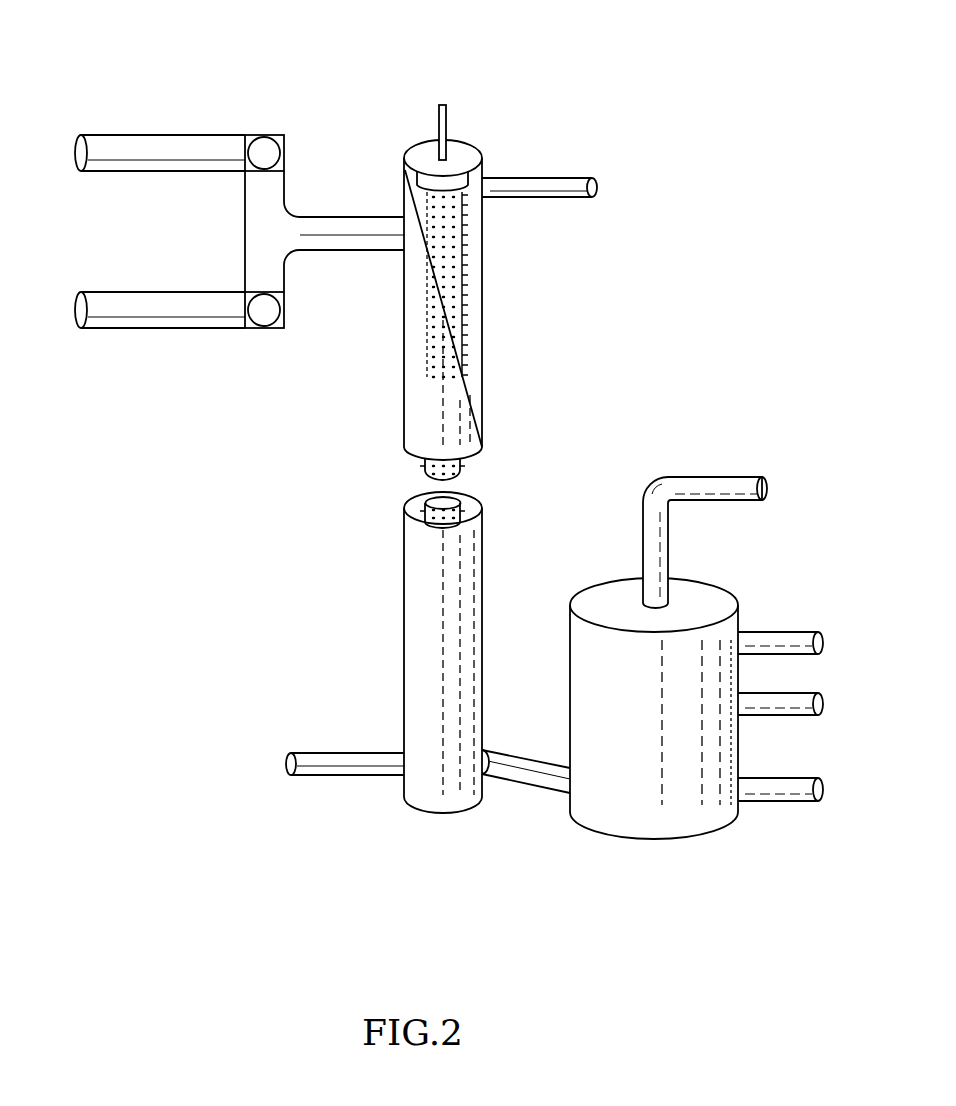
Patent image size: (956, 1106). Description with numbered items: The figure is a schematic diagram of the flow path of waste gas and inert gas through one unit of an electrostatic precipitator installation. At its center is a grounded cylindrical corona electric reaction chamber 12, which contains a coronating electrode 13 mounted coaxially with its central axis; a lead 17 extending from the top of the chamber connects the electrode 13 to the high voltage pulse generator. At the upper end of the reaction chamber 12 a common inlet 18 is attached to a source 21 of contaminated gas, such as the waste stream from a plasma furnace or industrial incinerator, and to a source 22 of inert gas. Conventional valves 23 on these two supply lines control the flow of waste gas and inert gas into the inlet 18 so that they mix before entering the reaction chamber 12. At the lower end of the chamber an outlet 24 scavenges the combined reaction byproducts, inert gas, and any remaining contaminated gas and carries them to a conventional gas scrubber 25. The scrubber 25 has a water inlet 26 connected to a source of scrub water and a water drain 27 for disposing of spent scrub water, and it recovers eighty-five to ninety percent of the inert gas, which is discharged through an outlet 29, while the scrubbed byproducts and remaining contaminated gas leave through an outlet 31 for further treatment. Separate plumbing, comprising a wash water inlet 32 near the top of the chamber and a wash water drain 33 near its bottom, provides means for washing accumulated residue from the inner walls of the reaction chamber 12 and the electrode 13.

The reaction chamber 12 is at (483, 398).
The coronating electrode 13 is at (452, 262).
The lead 17 is at (443, 128).
The inlet 18 is at (353, 223).
The source of contaminated gas 21 is at (122, 140).
The source of inert gas 22 is at (107, 313).
The valves 23 is at (266, 295).
The outlet 24 is at (513, 772).
The gas scrubber 25 is at (735, 563).
The water inlet 26 is at (708, 480).
The water drain 27 is at (773, 795).
The outlet 29 is at (767, 638).
The outlet 31 is at (777, 697).
The wash water inlet 32 is at (592, 177).
The wash water drain 33 is at (328, 763).